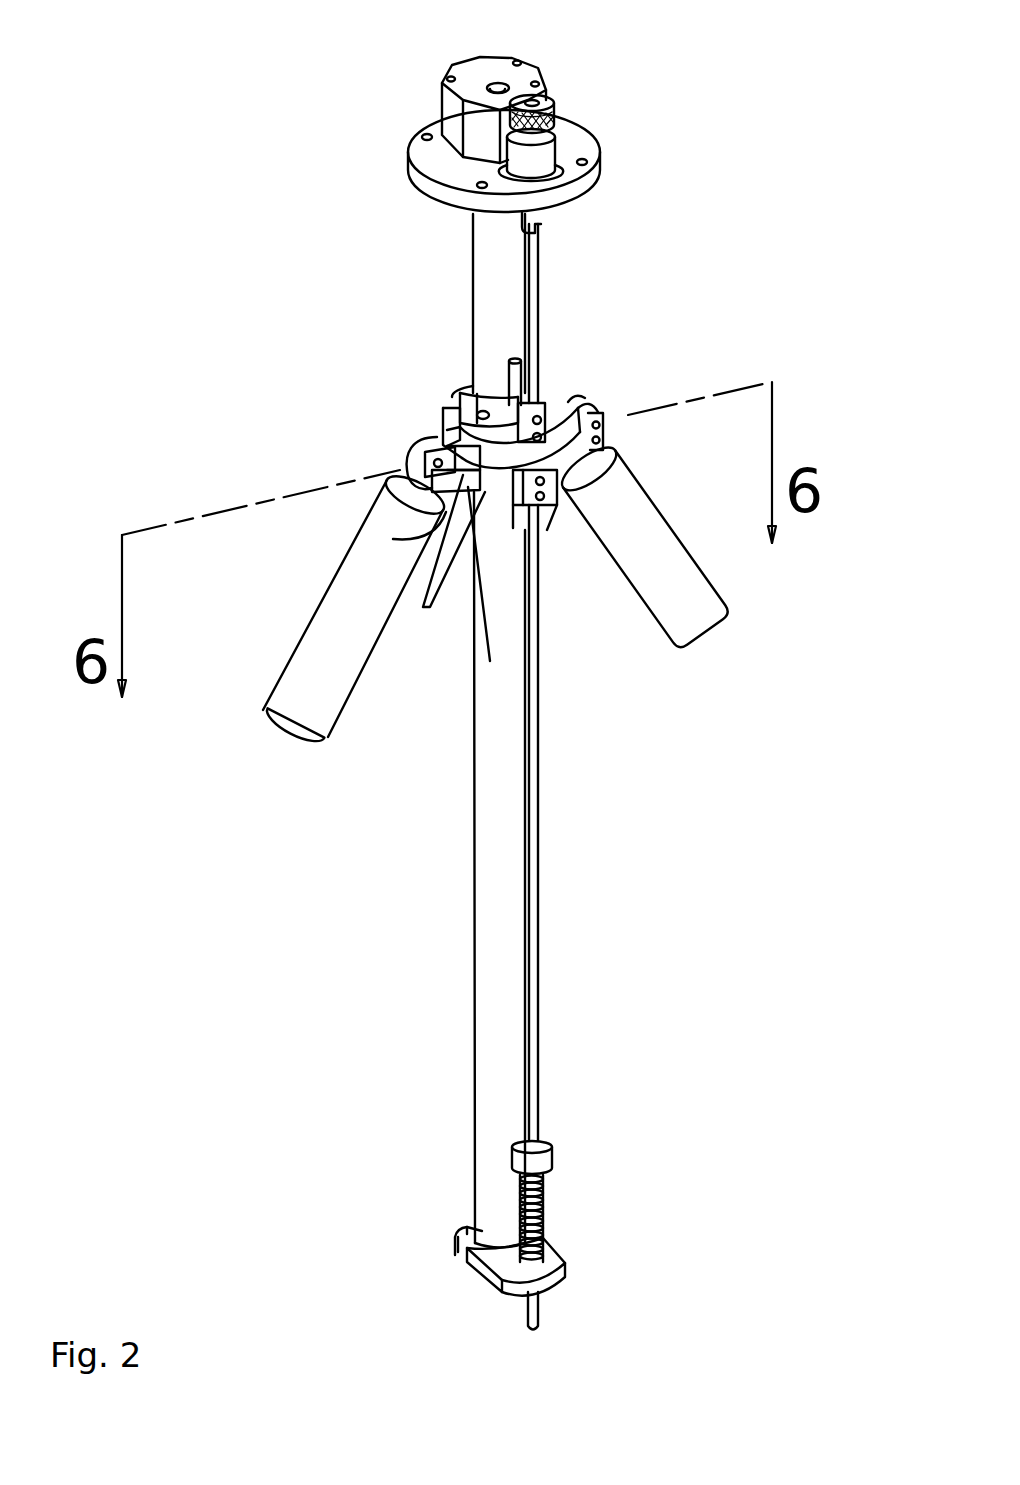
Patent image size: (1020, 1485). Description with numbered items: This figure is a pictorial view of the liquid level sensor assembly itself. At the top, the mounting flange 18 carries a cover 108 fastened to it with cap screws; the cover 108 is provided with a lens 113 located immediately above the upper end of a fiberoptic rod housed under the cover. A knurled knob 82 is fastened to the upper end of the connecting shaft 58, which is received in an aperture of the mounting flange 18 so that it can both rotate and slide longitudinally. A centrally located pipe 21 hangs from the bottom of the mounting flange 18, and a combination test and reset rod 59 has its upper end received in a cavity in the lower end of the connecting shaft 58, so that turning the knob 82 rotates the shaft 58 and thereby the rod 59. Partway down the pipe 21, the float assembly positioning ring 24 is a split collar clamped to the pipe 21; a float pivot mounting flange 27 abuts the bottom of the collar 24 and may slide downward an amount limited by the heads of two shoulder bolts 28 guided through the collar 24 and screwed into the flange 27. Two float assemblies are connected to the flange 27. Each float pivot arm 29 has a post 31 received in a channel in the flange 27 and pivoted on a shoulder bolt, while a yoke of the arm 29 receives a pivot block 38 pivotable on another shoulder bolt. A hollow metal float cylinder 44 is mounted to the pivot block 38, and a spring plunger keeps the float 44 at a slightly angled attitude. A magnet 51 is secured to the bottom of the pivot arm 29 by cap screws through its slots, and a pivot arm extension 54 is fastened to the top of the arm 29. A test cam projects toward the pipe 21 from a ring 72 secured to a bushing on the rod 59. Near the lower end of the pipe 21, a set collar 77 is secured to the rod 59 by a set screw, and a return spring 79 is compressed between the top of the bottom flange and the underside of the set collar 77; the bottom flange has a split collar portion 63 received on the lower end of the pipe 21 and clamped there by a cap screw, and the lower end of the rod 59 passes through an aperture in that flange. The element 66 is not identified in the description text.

The mounting flange 18 is at (582, 137).
The cover 108 is at (448, 114).
The lens 113 is at (497, 88).
The knurled knob 82 is at (543, 102).
The connecting shaft 58 is at (540, 220).
The pipe 21 is at (485, 317).
The combination test and reset rod 59 is at (532, 288).
The float assembly positioning ring 24 is at (465, 378).
The shoulder bolts 28 is at (513, 383).
The float pivot mounting flange 27 is at (555, 417).
The post 31 is at (447, 430).
The pivot block 38 is at (422, 455).
The float pivot arm 29 is at (393, 539).
The pivot arm extension 54 is at (423, 607).
The float cylinder 44 is at (312, 665).
The magnet 51 is at (490, 663).
The ring 72 is at (552, 513).
The set collar 77 is at (543, 1160).
The return spring 79 is at (542, 1206).
The tab 66 is at (467, 1250).
The split collar portion 63 is at (558, 1273).